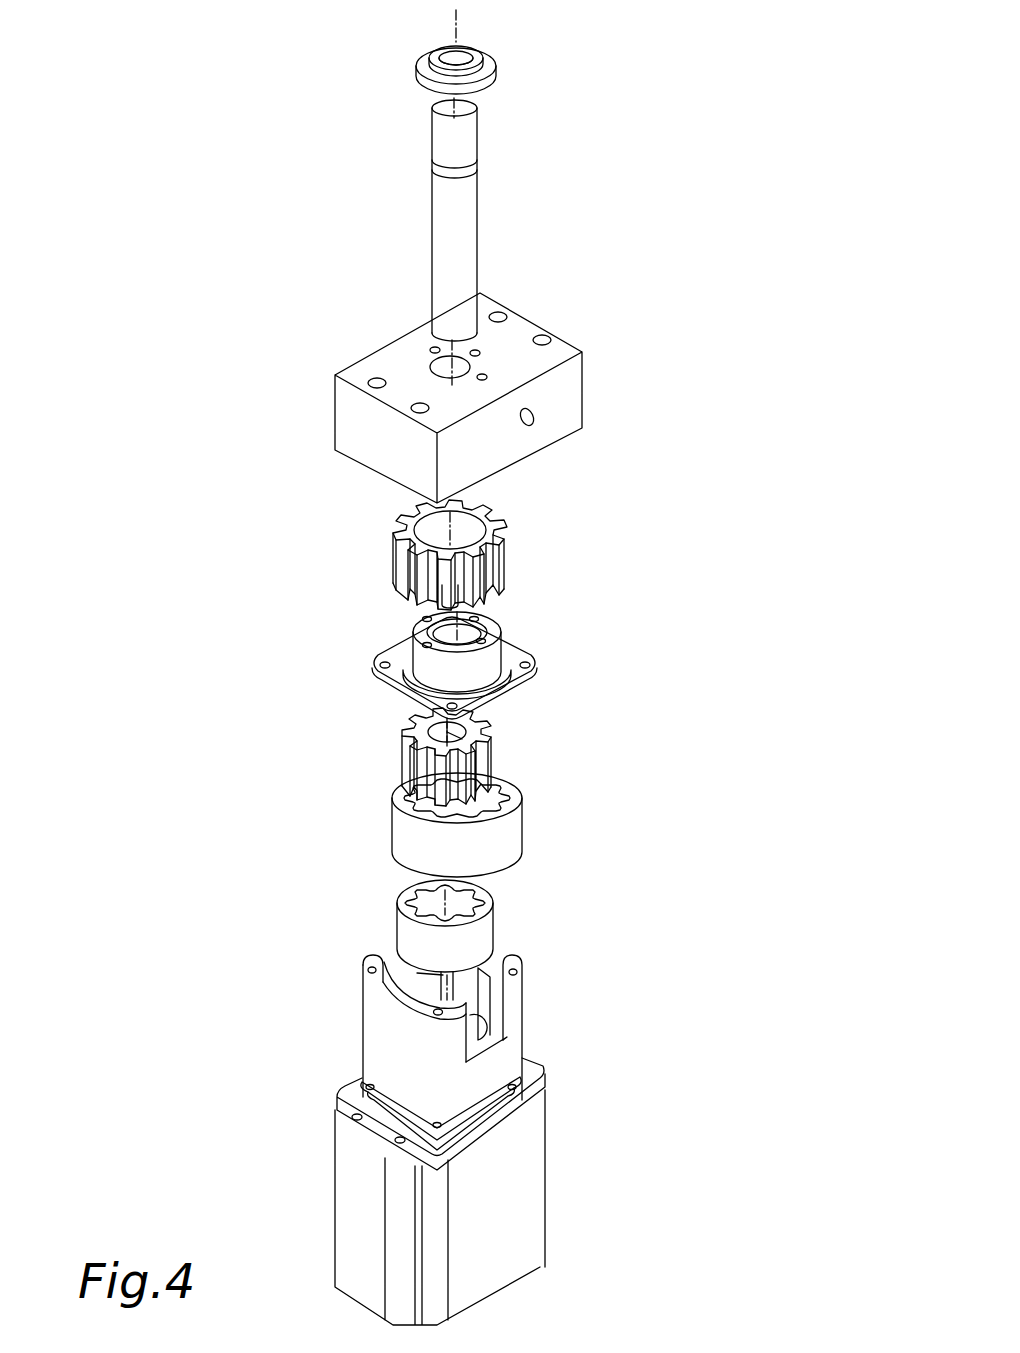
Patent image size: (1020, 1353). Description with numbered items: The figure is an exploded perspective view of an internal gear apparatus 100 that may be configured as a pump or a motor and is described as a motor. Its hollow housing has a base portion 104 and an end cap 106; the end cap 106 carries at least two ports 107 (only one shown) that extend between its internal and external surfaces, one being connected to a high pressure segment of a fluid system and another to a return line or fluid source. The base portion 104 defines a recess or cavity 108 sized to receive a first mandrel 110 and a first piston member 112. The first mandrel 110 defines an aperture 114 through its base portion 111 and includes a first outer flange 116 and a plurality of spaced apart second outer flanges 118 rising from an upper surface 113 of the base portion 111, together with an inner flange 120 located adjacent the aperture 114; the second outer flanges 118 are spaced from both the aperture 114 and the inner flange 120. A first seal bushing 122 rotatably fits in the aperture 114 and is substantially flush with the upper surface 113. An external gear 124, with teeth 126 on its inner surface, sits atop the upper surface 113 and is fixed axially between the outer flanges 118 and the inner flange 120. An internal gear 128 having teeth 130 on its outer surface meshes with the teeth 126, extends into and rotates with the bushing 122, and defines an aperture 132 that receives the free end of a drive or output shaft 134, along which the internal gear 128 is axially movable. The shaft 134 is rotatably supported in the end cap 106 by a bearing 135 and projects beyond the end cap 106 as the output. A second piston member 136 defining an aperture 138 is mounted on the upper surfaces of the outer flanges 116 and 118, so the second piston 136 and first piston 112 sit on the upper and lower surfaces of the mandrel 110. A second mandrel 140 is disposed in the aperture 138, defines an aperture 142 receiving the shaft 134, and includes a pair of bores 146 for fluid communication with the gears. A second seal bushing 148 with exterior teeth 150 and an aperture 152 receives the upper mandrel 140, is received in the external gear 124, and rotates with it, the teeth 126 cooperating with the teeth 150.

The internal gear apparatus 100 is at (390, 664).
The base portion 104 is at (528, 1243).
The end cap 106 is at (578, 392).
The ports 107 is at (587, 433).
The recess or cavity 108 is at (397, 1114).
The first mandrel 110 is at (431, 1029).
The base portion 111 is at (477, 1118).
The first piston member 112 is at (523, 1073).
The upper surface 113 is at (493, 1025).
The aperture 114 is at (537, 1052).
The first outer flange 116 is at (373, 1022).
The second outer flanges 118 is at (400, 993).
The inner flange 120 is at (477, 982).
The first seal bushing 122 is at (400, 942).
The external gear 124 is at (400, 833).
The teeth 126 is at (507, 775).
The internal gear 128 is at (434, 754).
The teeth 130 is at (400, 735).
The aperture 132 is at (498, 728).
The drive or output shaft 134 is at (468, 230).
The bearing 135 is at (430, 60).
The second piston member 136 is at (413, 668).
The aperture 138 is at (401, 672).
The second mandrel 140 is at (448, 648).
The aperture 142 is at (403, 630).
The bores 146 is at (488, 628).
The second seal bushing 148 is at (457, 550).
The teeth 150 is at (493, 512).
The aperture 152 is at (511, 536).